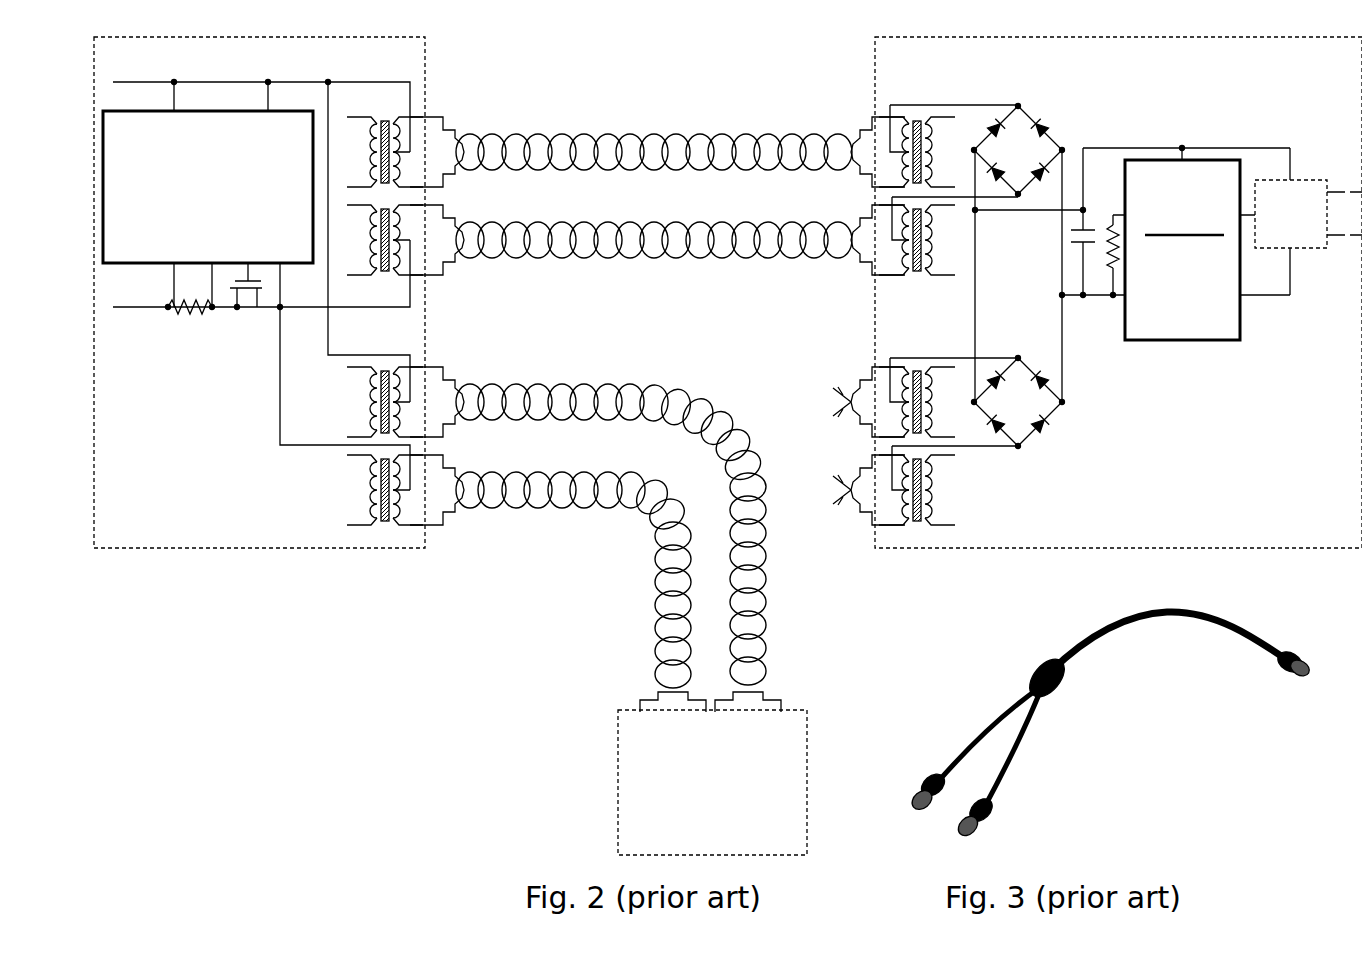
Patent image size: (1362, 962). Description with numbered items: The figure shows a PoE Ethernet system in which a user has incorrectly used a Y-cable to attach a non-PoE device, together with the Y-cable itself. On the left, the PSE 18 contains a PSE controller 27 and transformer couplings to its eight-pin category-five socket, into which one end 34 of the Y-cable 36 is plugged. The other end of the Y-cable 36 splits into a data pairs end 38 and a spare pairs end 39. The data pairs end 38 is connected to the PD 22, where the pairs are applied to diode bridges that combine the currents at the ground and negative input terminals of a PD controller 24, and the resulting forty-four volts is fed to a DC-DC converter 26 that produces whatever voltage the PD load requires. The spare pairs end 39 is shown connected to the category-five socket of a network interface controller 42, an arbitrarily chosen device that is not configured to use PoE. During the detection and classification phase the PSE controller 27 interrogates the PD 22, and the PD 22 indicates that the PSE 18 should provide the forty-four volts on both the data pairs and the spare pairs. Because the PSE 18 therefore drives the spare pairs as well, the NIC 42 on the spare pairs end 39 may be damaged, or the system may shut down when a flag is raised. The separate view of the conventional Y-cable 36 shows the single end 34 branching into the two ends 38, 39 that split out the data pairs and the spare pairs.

In FIG. 2, the PSE 18 is at (272, 292).
In FIG. 2, the PD 22 is at (1092, 292).
In FIG. 2, the PD controller 24 is at (1241, 318).
In FIG. 2, the DC-DC converter 26 is at (1305, 182).
In FIG. 2, the PSE controller 27 is at (102, 219).
In FIG. 2, the one end of the Y-cable 34 is at (465, 275).
In FIG. 3, the one end of the Y-cable 34 is at (1266, 667).
In FIG. 2, the Y-cable 36 is at (657, 414).
In FIG. 3, the Y-cable 36 is at (1110, 726).
In FIG. 2, the data pairs end 38 is at (842, 284).
In FIG. 3, the data pairs end 38 is at (908, 782).
In FIG. 2, the spare pairs end 39 is at (776, 662).
In FIG. 3, the spare pairs end 39 is at (993, 830).
In FIG. 2, the network interface controller 42 is at (616, 756).